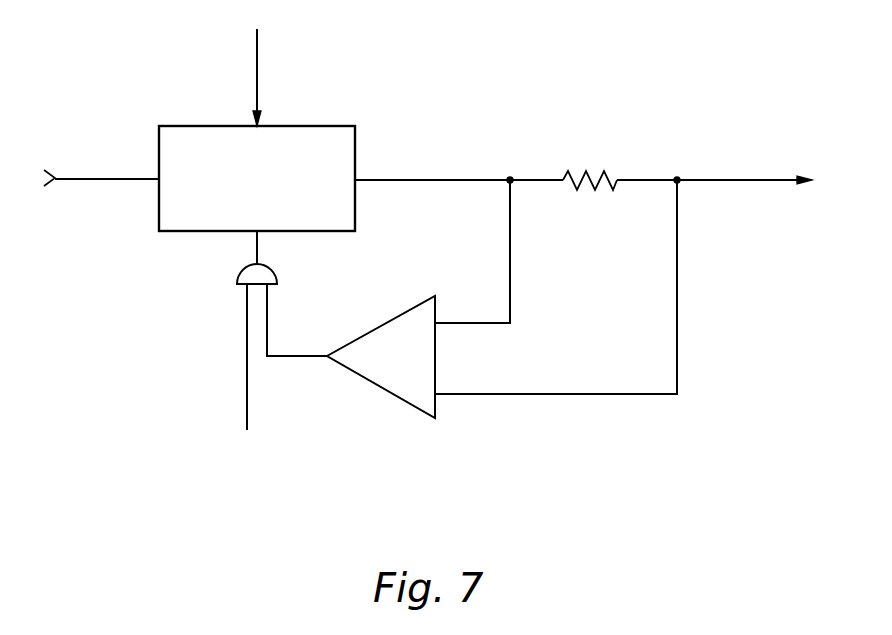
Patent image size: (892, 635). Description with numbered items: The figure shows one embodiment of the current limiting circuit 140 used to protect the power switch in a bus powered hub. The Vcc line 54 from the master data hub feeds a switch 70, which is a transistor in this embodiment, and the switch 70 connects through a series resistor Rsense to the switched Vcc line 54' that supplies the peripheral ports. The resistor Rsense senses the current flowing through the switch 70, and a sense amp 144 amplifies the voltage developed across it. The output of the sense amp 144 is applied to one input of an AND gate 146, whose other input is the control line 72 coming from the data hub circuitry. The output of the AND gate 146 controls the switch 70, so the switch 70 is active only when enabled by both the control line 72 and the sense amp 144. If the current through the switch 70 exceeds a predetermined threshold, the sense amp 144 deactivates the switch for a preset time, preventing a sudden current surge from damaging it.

The switch 70 is at (312, 126).
The control line 72 is at (257, 63).
The AND gate 146 is at (237, 279).
The sense amp 144 is at (355, 377).
The current limiting circuit 140 is at (702, 404).
The Vcc line 54 is at (101, 197).
The switched Vcc line 54' is at (583, 153).